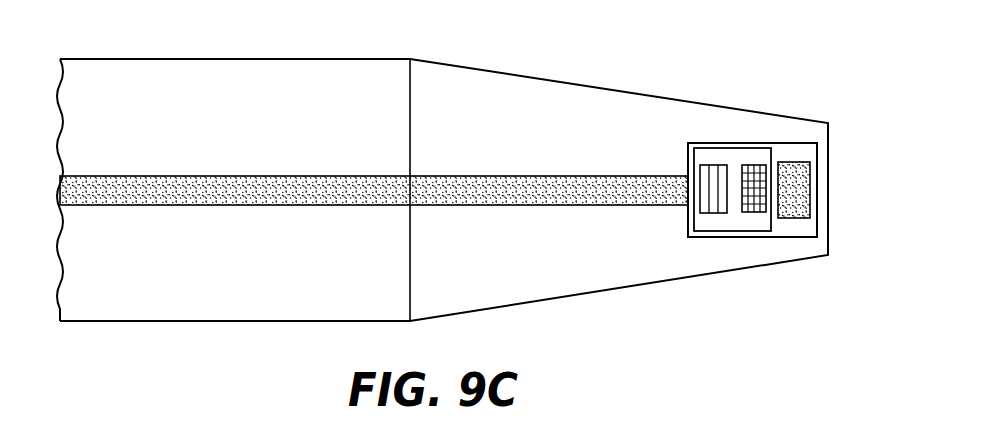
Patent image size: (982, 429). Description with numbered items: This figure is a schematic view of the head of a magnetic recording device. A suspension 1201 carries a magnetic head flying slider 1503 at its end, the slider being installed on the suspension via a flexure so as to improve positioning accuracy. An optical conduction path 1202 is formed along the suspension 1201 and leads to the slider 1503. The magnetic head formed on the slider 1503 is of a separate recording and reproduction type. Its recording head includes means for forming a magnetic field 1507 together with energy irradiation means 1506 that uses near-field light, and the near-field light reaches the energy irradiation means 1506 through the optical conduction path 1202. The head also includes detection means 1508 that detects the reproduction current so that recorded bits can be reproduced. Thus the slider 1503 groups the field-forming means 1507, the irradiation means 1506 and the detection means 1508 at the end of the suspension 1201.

The suspension 1201 is at (441, 64).
The optical conduction path 1202 is at (603, 183).
The magnetic head flying slider 1503 is at (732, 143).
The energy irradiation means 1506 is at (798, 163).
The means for forming a magnetic field 1507 is at (752, 212).
The detection means 1508 is at (710, 208).